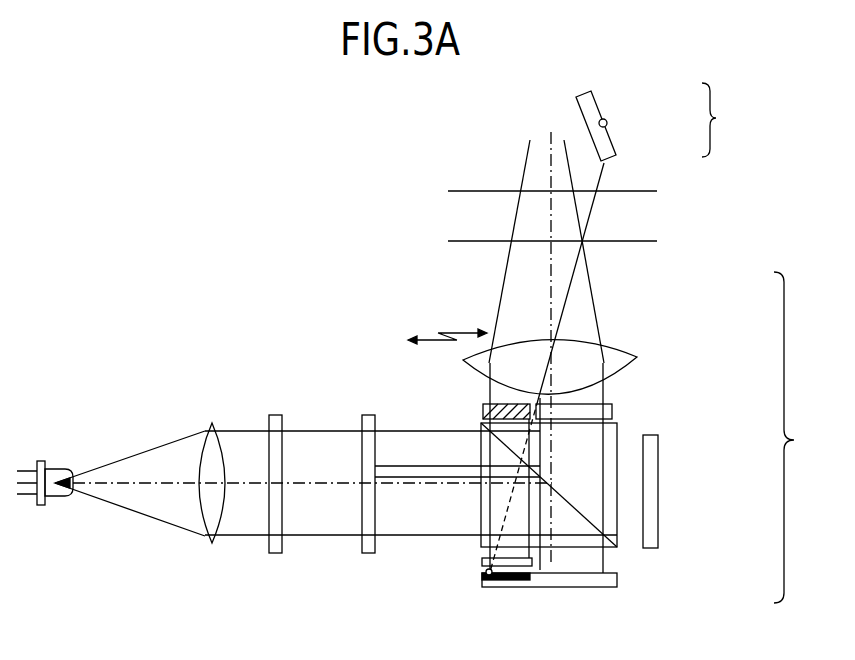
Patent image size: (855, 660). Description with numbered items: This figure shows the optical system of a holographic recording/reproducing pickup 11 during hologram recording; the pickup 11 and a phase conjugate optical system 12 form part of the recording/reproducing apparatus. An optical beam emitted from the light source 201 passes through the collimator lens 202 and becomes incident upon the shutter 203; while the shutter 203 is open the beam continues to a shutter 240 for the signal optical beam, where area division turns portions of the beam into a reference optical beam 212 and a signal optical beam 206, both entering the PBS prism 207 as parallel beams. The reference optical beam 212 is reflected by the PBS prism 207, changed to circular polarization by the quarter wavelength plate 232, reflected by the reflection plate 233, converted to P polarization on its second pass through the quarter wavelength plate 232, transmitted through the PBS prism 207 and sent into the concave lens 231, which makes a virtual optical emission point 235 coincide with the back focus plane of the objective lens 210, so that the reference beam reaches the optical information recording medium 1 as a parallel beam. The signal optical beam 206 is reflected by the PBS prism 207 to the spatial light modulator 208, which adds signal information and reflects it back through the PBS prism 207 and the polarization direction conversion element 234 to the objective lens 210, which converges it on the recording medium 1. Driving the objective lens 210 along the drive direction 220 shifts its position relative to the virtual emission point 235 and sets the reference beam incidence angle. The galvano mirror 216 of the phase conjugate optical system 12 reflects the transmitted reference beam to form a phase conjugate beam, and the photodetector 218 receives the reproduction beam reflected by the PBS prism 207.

The optical information recording medium 1 is at (455, 213).
The pickup 11 is at (800, 437).
The phase conjugate optical system 12 is at (724, 120).
The light source 201 is at (58, 468).
The collimator lens 202 is at (212, 422).
The shutter 203 is at (276, 415).
The signal optical beam 206 is at (583, 298).
The PBS prism 207 is at (620, 428).
The spatial light modulator 208 is at (578, 588).
The objective lens 210 is at (628, 350).
The reference optical beam 212 is at (514, 289).
The galvano mirror 216 is at (610, 137).
The photodetector 218 is at (660, 478).
The drive direction 220 is at (443, 331).
The lens 231 is at (483, 408).
The quarter wavelength plate 232 is at (482, 562).
The reflection plate 233 is at (518, 581).
The polarization direction conversion element 234 is at (613, 410).
The virtual optical emission point 235 is at (486, 571).
The shutter 240 is at (370, 415).